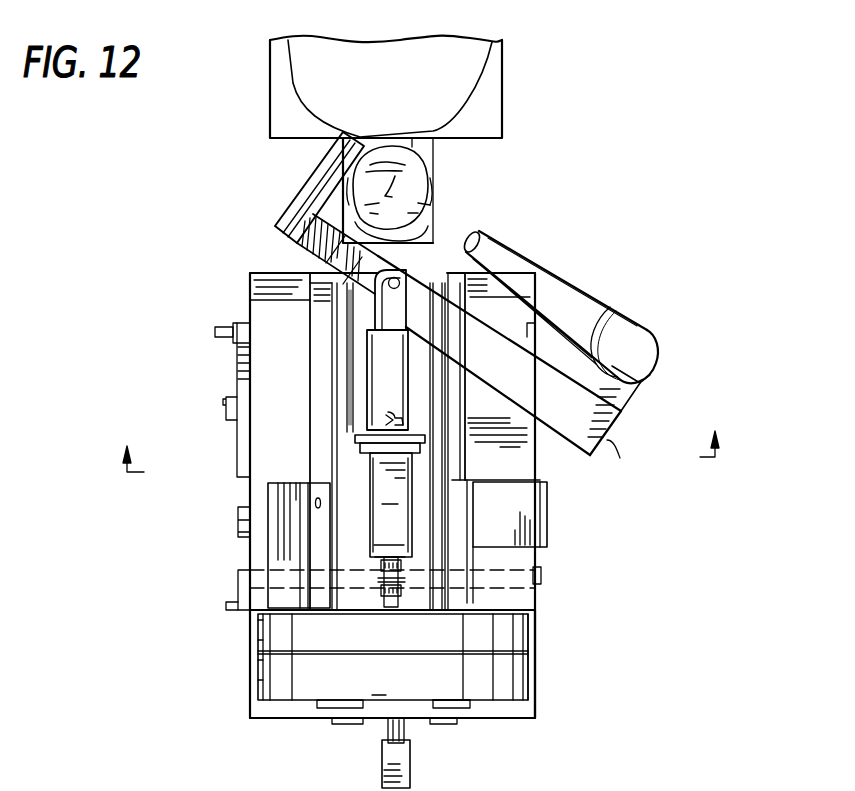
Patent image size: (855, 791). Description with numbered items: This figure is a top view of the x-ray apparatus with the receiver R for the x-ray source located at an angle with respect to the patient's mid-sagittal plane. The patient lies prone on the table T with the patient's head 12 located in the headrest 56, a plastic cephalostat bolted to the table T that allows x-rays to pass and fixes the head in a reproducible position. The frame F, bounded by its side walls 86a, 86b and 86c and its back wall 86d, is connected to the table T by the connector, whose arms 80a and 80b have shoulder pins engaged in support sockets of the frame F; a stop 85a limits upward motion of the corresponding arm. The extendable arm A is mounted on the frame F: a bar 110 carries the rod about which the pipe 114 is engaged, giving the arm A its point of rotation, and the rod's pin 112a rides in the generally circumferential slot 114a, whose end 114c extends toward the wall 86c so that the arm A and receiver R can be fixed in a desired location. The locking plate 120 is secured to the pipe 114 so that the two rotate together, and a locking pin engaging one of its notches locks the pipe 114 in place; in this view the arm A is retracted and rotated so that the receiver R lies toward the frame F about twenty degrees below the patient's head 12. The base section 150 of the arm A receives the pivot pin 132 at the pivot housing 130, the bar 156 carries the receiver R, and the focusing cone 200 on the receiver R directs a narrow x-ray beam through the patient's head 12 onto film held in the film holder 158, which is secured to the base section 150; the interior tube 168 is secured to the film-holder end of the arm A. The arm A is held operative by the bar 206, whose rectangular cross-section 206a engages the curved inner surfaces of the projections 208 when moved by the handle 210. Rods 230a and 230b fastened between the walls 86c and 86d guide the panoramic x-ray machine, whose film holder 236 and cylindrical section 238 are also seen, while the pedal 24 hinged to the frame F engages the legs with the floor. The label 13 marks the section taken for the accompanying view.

The table T is at (504, 58).
The headrest 56 is at (433, 145).
The patient's head 12 is at (434, 180).
The film holder 158 is at (318, 188).
The interior tube 168 is at (298, 246).
The pivot housing 130 is at (374, 326).
The pivot pin 132 is at (404, 278).
The base section 150 is at (496, 358).
The bar 156 is at (622, 396).
The focusing cone 200 is at (541, 264).
The receiver R is at (640, 320).
The arm 80a is at (237, 477).
The arm 80b is at (540, 462).
The side wall 86c is at (252, 273).
The rod 230a is at (256, 299).
The stop 85a is at (214, 332).
The slot end 114c is at (237, 401).
The pipe 114 is at (368, 365).
The slot 114a is at (405, 420).
The pin 112a is at (388, 421).
The locking plate 120 is at (357, 449).
The bar 110 is at (420, 450).
The projections 208 is at (398, 592).
The rectangular cross-section 206a is at (380, 588).
The x-ray film holder 236 is at (527, 511).
The bar 206 is at (542, 576).
The handle 210 is at (237, 600).
The side wall 86a is at (250, 552).
The frame F is at (537, 675).
The side wall 86b is at (537, 629).
The cylindrical section 238 is at (268, 680).
The back wall 86d is at (277, 721).
The rod 230b is at (455, 708).
The pedal 24 is at (412, 764).
The section line 13 is at (420, 436).
The arm A is at (618, 457).